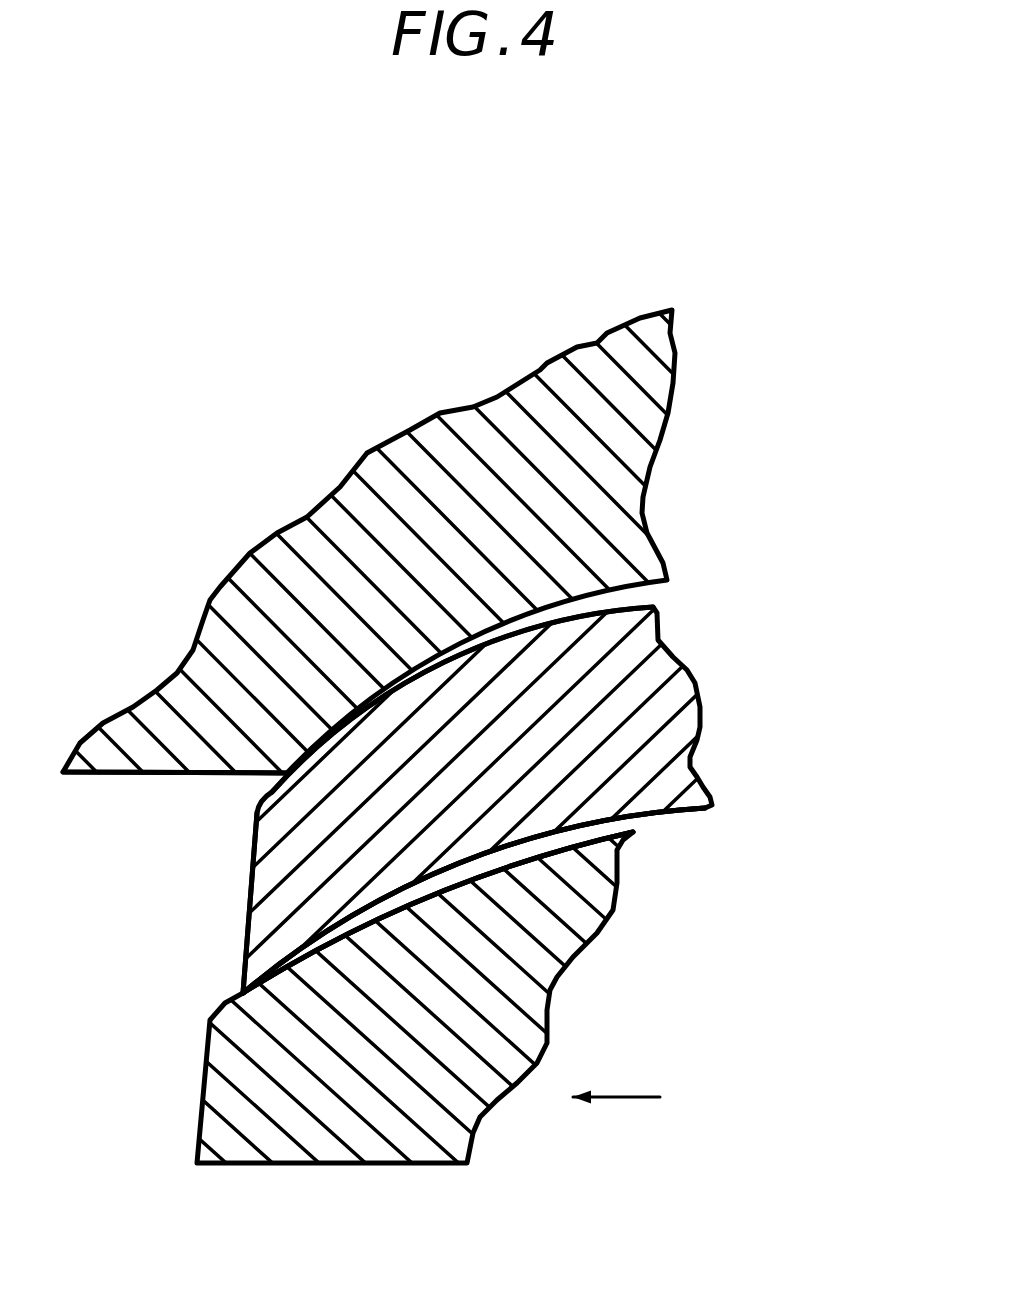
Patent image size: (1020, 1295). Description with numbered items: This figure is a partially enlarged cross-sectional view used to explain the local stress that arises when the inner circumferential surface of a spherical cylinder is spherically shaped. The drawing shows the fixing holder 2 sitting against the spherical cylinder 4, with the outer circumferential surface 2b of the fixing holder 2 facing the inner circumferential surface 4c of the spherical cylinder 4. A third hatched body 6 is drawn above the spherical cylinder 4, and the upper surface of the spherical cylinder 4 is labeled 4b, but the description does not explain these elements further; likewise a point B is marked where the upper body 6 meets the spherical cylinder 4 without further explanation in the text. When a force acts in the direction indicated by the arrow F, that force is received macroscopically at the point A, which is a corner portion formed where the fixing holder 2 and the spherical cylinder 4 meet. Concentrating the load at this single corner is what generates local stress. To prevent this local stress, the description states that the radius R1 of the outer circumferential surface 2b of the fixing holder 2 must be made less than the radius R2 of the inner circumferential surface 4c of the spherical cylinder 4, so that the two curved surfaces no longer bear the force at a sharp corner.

The fixing holder 2 is at (520, 1000).
The outer circumferential surface 2b is at (567, 827).
The spherical cylinder 4 is at (623, 700).
The upper surface of second member 4b is at (625, 606).
The inner circumferential surface 4c is at (707, 803).
The third member (upper body) 6 is at (520, 500).
The radius of the outer circumferential surface R1 is at (418, 903).
The radius of the inner circumferential surface R2 is at (683, 810).
The point A is at (230, 988).
The contact point B is at (288, 760).
The force direction F is at (616, 1119).